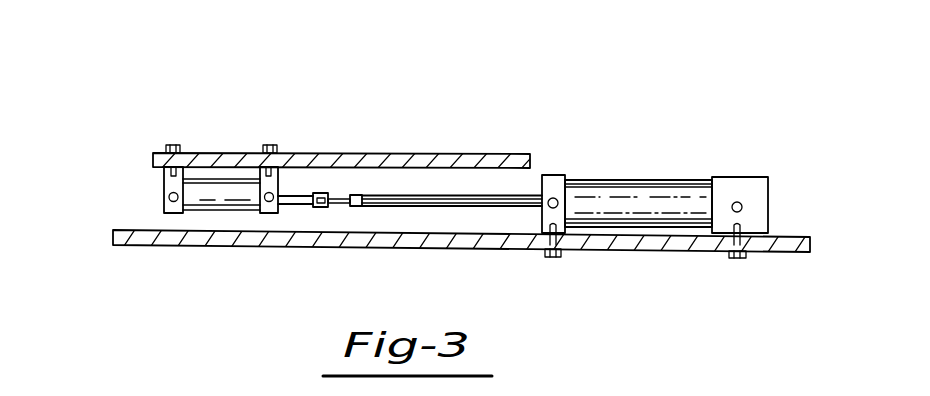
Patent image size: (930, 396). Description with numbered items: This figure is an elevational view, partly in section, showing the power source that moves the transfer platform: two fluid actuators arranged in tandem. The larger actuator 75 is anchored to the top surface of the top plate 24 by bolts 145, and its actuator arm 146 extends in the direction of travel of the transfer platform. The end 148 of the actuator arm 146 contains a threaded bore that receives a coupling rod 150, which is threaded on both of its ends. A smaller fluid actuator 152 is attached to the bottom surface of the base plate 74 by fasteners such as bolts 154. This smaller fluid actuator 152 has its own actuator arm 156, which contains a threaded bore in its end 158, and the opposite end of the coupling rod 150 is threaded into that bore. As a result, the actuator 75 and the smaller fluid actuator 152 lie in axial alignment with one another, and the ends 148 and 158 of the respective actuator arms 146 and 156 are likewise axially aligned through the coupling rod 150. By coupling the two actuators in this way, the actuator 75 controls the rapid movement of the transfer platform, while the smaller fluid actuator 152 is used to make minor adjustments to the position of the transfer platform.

The top plate 24 is at (188, 246).
The base plate 74 is at (413, 154).
The actuator 75 is at (645, 180).
The bolts 145 is at (553, 257).
The actuator arm 146 is at (455, 207).
The end of the actuator arm 148 is at (358, 207).
The coupling rod 150 is at (342, 195).
The smaller fluid actuator 152 is at (164, 180).
The bolts 154 is at (174, 145).
The actuator arm 156 is at (297, 206).
The end of the actuator arm 158 is at (318, 193).